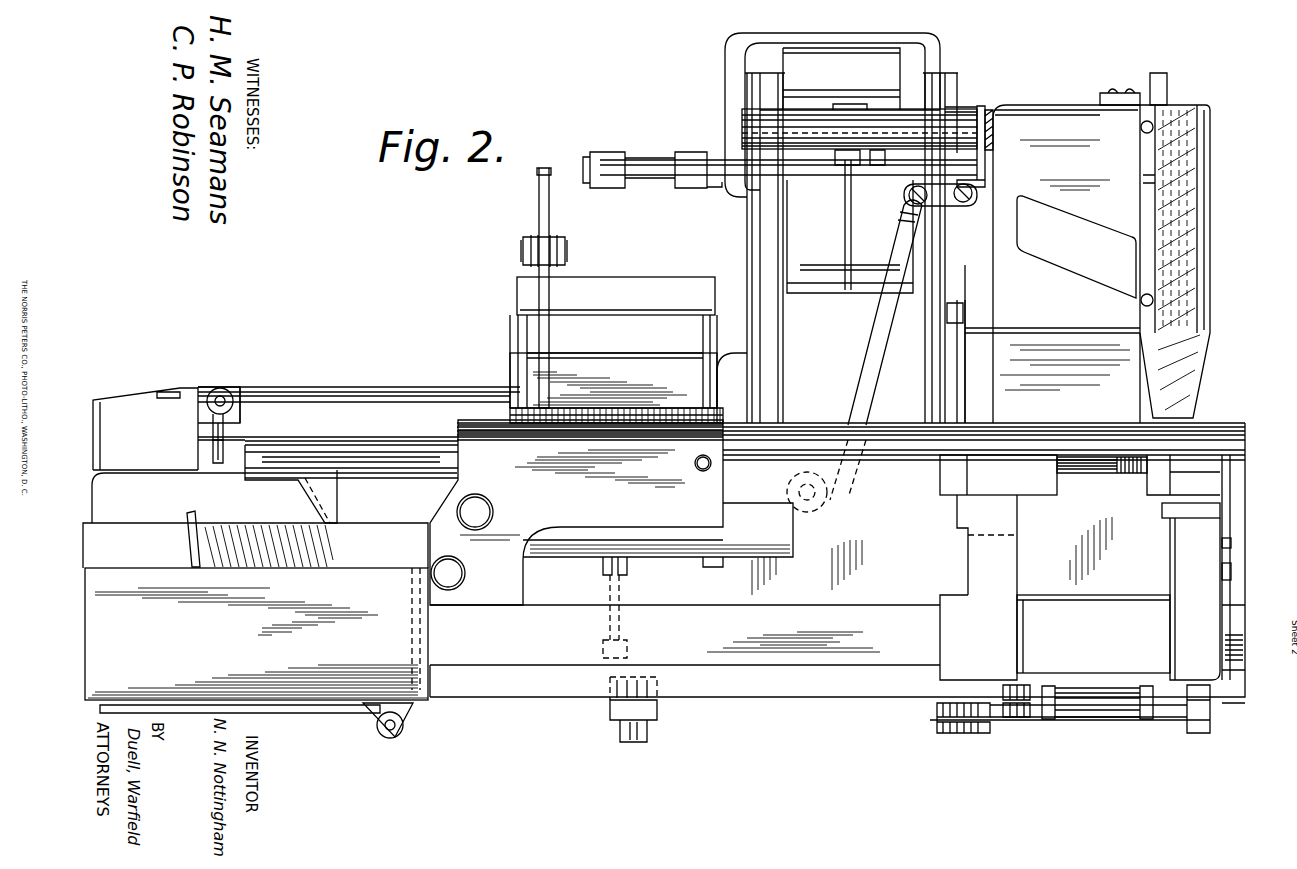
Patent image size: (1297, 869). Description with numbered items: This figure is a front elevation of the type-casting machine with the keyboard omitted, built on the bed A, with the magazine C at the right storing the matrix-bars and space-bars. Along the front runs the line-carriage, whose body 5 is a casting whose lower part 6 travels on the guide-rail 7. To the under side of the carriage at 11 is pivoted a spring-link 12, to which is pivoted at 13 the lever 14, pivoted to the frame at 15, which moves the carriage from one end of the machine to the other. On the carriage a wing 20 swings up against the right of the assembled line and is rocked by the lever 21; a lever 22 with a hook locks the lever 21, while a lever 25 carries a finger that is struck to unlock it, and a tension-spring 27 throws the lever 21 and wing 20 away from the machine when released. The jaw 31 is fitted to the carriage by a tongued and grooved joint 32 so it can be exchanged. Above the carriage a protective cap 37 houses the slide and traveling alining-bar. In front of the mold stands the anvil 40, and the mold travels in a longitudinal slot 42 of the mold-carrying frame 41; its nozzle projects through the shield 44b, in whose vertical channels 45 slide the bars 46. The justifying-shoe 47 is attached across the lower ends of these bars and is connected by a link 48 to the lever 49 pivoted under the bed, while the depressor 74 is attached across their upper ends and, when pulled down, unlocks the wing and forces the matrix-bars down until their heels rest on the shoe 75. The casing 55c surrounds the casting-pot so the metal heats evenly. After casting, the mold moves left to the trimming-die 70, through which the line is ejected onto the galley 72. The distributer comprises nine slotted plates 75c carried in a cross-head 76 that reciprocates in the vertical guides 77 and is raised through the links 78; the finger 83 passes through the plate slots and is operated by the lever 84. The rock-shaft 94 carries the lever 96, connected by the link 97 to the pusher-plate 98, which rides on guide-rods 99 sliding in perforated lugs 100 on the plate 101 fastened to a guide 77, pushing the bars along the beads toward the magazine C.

The bed A is at (793, 683).
The carriage body 5 is at (1178, 548).
The lower part of carriage 6 is at (1093, 634).
The guide-rail 7 is at (685, 635).
The pivot on under side of carriage 11 is at (1020, 692).
The spring-link 12 is at (1105, 700).
The pivot of lever to spring-link 13 is at (1210, 703).
The lever 14 is at (1050, 718).
The lever pivot 15 is at (957, 730).
The wing 20 is at (1160, 480).
The lever 21 is at (1225, 512).
The lever 22 is at (1232, 547).
The lever 25 is at (1232, 572).
The tension-spring 27 is at (1125, 473).
The jaw 31 is at (998, 475).
The tongued and grooved joint 32 is at (967, 533).
The cap 37 is at (1193, 437).
The anvil 40 is at (576, 512).
The mold-carrying frame 41 is at (413, 420).
The longitudinal slot 42 is at (232, 457).
The shield 44b is at (628, 387).
The vertical channels 45 is at (512, 350).
The bars 46 is at (518, 368).
The justifying-shoe 47 is at (703, 560).
The link 48 is at (615, 600).
The lever 49 is at (615, 707).
The casing 55c is at (548, 225).
The trimming-die 70 is at (268, 453).
The galley 72 is at (256, 653).
The depressor 74 is at (616, 296).
The shoe 75 is at (658, 530).
The distributer-plates 75c is at (960, 110).
The cross-head 76 is at (784, 238).
The vertical guides 77 is at (760, 243).
The links 78 is at (955, 107).
The finger 83 is at (845, 153).
The lever 84 is at (847, 242).
The rock-shaft 94 is at (820, 500).
The lever 96 is at (843, 366).
The link 97 is at (950, 204).
The pusher-plate 98 is at (985, 110).
The guide-rods 99 is at (752, 172).
The perforated lugs 100 is at (687, 155).
The plate 101 is at (725, 62).
The magazine C is at (1157, 247).